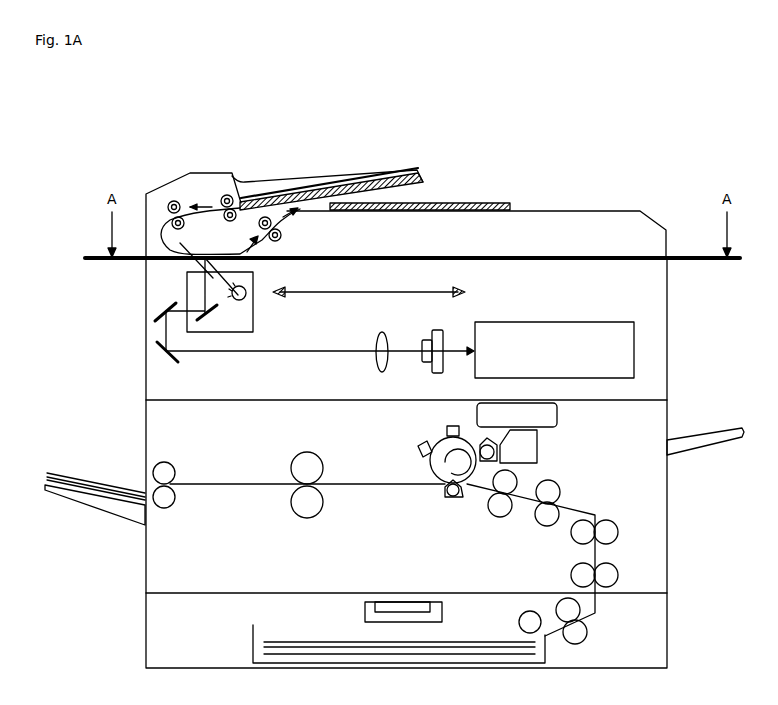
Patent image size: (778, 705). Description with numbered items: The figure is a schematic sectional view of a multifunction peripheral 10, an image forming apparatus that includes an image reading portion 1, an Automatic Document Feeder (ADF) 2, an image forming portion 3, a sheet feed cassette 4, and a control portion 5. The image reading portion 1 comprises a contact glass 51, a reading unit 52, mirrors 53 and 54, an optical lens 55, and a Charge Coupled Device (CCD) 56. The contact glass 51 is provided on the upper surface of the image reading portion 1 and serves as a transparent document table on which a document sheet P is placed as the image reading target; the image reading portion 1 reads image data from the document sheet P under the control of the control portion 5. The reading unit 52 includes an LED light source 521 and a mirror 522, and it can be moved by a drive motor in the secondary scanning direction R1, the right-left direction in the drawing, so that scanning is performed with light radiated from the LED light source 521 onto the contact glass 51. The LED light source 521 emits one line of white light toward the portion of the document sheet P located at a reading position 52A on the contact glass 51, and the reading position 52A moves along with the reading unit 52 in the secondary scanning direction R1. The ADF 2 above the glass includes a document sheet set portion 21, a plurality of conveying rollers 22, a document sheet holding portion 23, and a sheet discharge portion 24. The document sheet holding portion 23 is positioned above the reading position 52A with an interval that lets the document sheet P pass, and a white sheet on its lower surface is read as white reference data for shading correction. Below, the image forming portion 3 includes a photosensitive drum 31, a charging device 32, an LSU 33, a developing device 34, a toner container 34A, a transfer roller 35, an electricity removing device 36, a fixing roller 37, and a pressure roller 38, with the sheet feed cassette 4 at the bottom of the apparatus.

The multifunction peripheral 10 is at (57, 139).
The image reading portion 1 is at (667, 308).
The Automatic Document Feeder (ADF) 2 is at (667, 243).
The image forming portion 3 is at (667, 513).
The sheet feed cassette 4 is at (667, 625).
The control portion 5 is at (634, 350).
The document sheet set portion 21 is at (362, 170).
The conveying rollers 22 is at (173, 203).
The document sheet holding portion 23 is at (201, 262).
The sheet discharge portion 24 is at (410, 212).
The contact glass 51 is at (498, 266).
The reading unit 52 is at (253, 274).
The reading position 52A is at (187, 273).
The mirror 53 is at (153, 311).
The mirror 54 is at (152, 350).
The optical lens 55 is at (374, 333).
The Charge Coupled Device (CCD) 56 is at (435, 329).
The LED light source 521 is at (252, 302).
The mirror 522 is at (212, 332).
The photosensitive drum 31 is at (428, 466).
The charging device 32 is at (443, 427).
The LSU 33 is at (558, 410).
The developing device 34 is at (490, 462).
The toner container 34A is at (537, 445).
The transfer roller 35 is at (455, 503).
The electricity removing device 36 is at (417, 447).
The fixing roller 37 is at (304, 451).
The pressure roller 38 is at (297, 516).
The document sheet P is at (322, 185).
The secondary scanning direction R1 is at (318, 295).